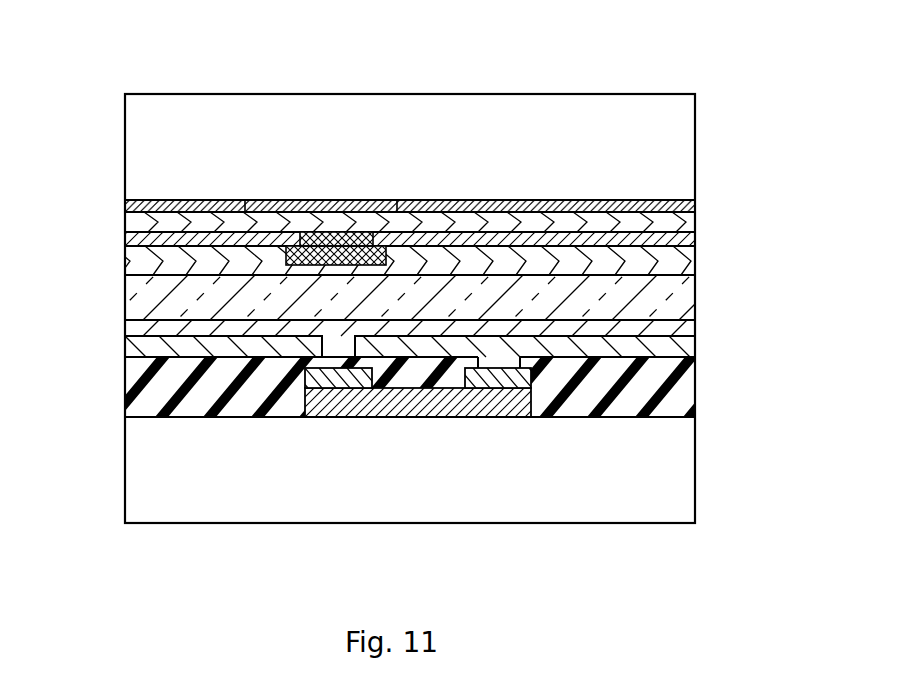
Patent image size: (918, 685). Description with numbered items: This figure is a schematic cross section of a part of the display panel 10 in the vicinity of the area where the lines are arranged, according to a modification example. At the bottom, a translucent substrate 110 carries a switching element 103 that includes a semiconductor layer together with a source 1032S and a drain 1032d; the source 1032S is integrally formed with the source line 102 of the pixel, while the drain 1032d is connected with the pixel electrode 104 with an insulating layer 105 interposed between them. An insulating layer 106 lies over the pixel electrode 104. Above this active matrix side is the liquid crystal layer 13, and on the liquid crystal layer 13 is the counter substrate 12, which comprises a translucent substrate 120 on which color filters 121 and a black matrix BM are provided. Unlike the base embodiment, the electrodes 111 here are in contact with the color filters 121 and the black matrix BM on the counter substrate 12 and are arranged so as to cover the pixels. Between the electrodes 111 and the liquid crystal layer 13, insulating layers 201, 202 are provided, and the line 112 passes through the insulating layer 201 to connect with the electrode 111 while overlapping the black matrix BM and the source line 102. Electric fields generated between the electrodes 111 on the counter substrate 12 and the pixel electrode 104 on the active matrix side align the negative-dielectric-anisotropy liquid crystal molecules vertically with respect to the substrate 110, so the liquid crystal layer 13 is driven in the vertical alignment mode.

The display panel 10 is at (531, 70).
The counter substrate 12 is at (438, 172).
The substrate 120 is at (687, 147).
The color filters 121 is at (127, 207).
The black matrix BM is at (320, 200).
The electrodes 111 is at (687, 221).
The insulating layer 201 is at (687, 240).
The insulating layer 202 is at (687, 267).
The line 112 is at (287, 257).
The liquid crystal layer 13 is at (790, 477).
The insulating layer 106 is at (687, 330).
The pixel electrode 104 is at (687, 353).
The insulating layer 105 is at (687, 388).
The switching element 103 is at (322, 421).
The source line 102 is at (269, 482).
The source 1032S is at (306, 372).
The drain 1032d is at (533, 375).
The substrate 110 is at (687, 463).